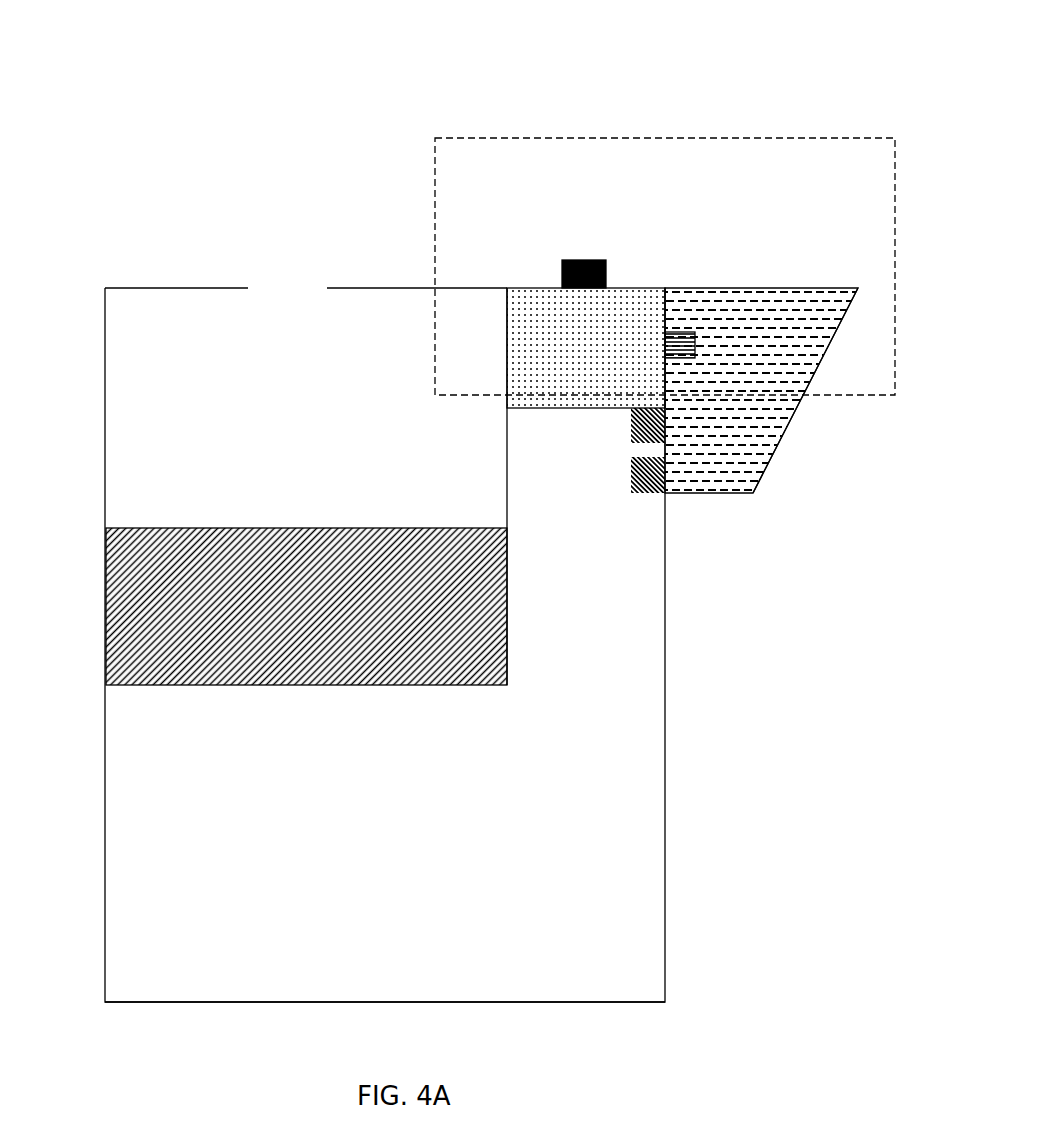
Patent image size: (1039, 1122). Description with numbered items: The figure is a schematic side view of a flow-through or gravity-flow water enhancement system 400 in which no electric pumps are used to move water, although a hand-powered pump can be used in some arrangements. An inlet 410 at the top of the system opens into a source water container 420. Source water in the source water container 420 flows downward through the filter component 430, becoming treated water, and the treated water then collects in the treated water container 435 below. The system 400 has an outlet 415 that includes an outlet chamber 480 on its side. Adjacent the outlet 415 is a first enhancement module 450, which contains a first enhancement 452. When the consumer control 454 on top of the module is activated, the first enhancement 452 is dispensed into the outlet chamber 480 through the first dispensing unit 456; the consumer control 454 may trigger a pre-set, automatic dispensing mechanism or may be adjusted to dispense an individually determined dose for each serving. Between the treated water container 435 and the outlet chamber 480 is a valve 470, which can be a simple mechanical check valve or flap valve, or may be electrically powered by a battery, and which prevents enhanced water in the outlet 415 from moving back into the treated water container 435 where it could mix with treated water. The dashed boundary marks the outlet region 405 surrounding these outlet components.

The water enhancement system 400 is at (163, 247).
The outlet region 405 is at (728, 117).
The inlet 410 is at (283, 297).
The outlet 415 is at (800, 430).
The source water container 420 is at (328, 419).
The filter component 430 is at (322, 612).
The treated water container 435 is at (408, 837).
The first enhancement module 450 is at (636, 289).
The first enhancement 452 is at (613, 355).
The consumer control 454 is at (603, 260).
The first dispensing unit 456 is at (683, 333).
The valve 470 is at (650, 483).
The outlet chamber 480 is at (773, 378).